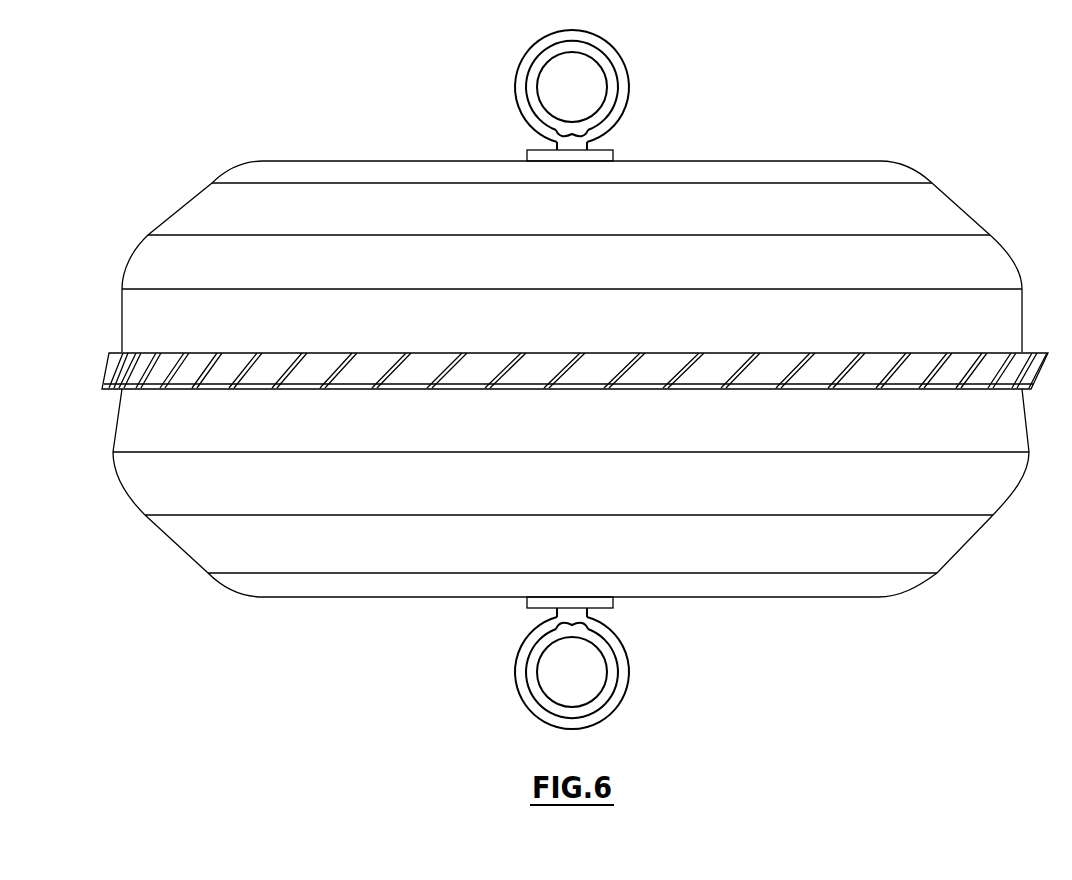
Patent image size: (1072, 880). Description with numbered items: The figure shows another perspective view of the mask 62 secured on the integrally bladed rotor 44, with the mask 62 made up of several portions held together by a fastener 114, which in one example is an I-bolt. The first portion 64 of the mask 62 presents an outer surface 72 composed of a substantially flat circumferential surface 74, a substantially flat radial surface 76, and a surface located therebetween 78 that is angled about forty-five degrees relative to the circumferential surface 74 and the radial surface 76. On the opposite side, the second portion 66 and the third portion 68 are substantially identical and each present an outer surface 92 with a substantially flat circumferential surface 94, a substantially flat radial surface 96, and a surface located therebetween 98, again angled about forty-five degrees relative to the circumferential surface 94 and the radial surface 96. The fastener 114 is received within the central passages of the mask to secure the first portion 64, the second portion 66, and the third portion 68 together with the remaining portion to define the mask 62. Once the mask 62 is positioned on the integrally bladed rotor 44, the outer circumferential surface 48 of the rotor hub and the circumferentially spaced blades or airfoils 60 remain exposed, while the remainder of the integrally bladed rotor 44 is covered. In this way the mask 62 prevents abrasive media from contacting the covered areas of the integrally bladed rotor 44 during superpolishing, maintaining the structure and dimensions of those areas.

The integrally bladed rotor 44 is at (426, 373).
The outer circumferential surface 48 is at (660, 372).
The circumferentially spaced blades or airfoils 60 is at (862, 372).
The mask 62 is at (916, 118).
The first portion 64 is at (789, 175).
The second portion 66 is at (252, 565).
The third portion 68 is at (794, 568).
The outer surface 72 is at (352, 170).
The circumferential surface 74 is at (125, 315).
The radial surface 76 is at (422, 161).
The surface located therebetween 78 is at (193, 195).
The outer surface 92 is at (427, 565).
The circumferential surface 94 is at (125, 425).
The radial surface 96 is at (484, 598).
The surface located therebetween 98 is at (180, 553).
The fastener 114 is at (618, 690).